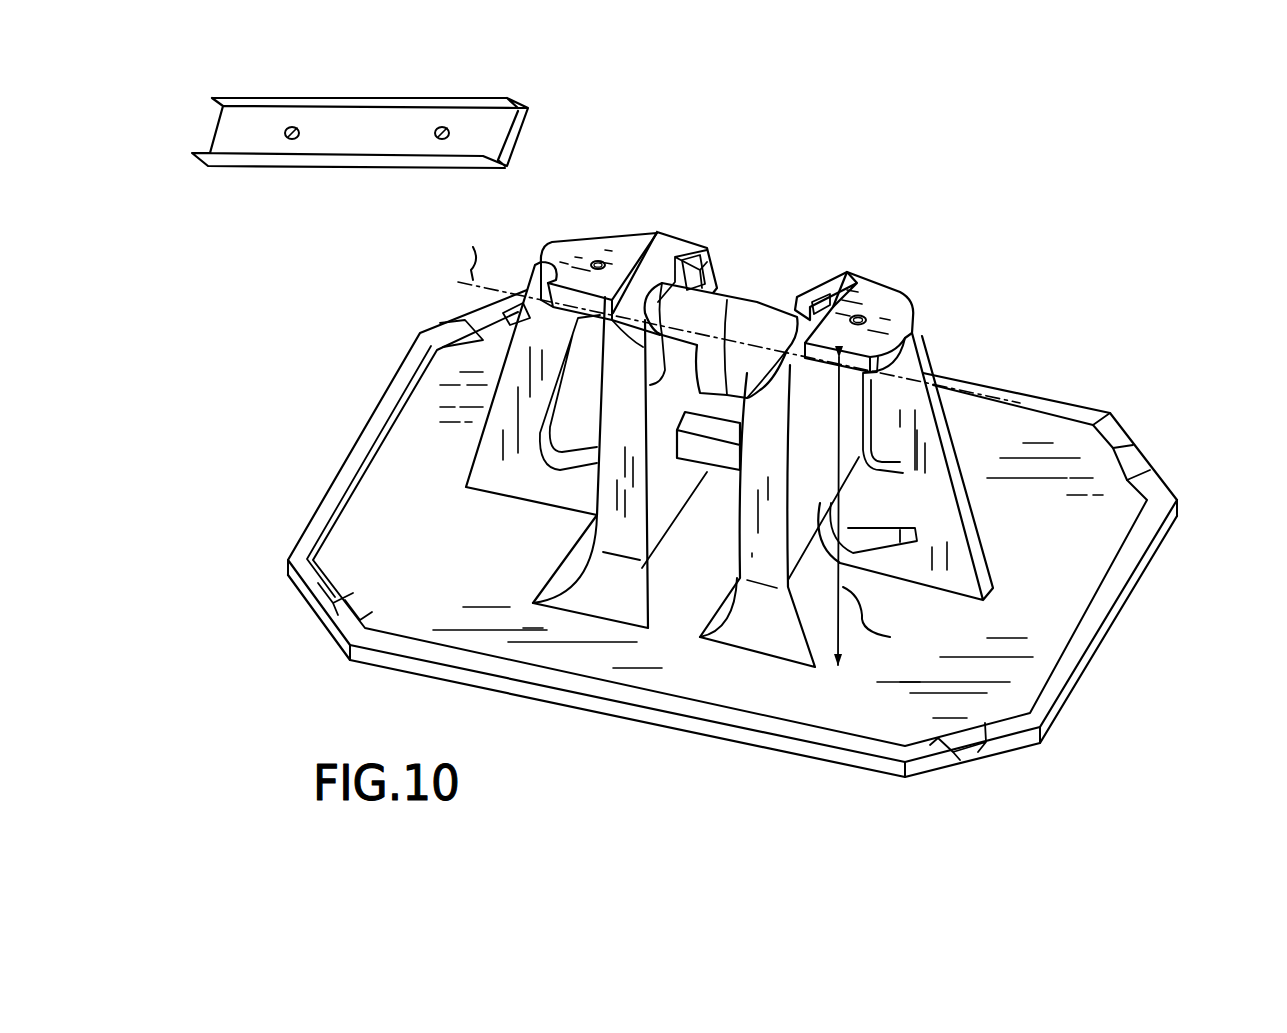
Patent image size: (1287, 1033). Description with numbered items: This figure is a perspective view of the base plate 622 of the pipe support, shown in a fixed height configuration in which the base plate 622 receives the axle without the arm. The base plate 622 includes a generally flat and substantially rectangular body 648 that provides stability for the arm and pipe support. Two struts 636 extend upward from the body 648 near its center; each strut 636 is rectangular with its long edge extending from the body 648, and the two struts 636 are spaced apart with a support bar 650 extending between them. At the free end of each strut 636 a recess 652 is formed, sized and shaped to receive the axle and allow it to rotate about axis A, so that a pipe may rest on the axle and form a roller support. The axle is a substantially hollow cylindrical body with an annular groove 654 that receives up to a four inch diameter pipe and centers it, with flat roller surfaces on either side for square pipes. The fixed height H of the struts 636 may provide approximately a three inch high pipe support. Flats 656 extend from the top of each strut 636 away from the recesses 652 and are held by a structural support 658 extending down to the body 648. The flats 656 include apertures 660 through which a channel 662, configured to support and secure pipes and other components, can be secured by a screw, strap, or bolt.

The base plate 622 is at (1092, 312).
The body 648 is at (335, 473).
The structural support 658 is at (478, 444).
The flats 656 is at (632, 238).
The apertures 660 is at (592, 255).
The struts 636 is at (690, 238).
The recess 652 is at (693, 258).
The annular groove 654 is at (741, 290).
The support bar 650 is at (723, 467).
The channel 662 is at (288, 163).